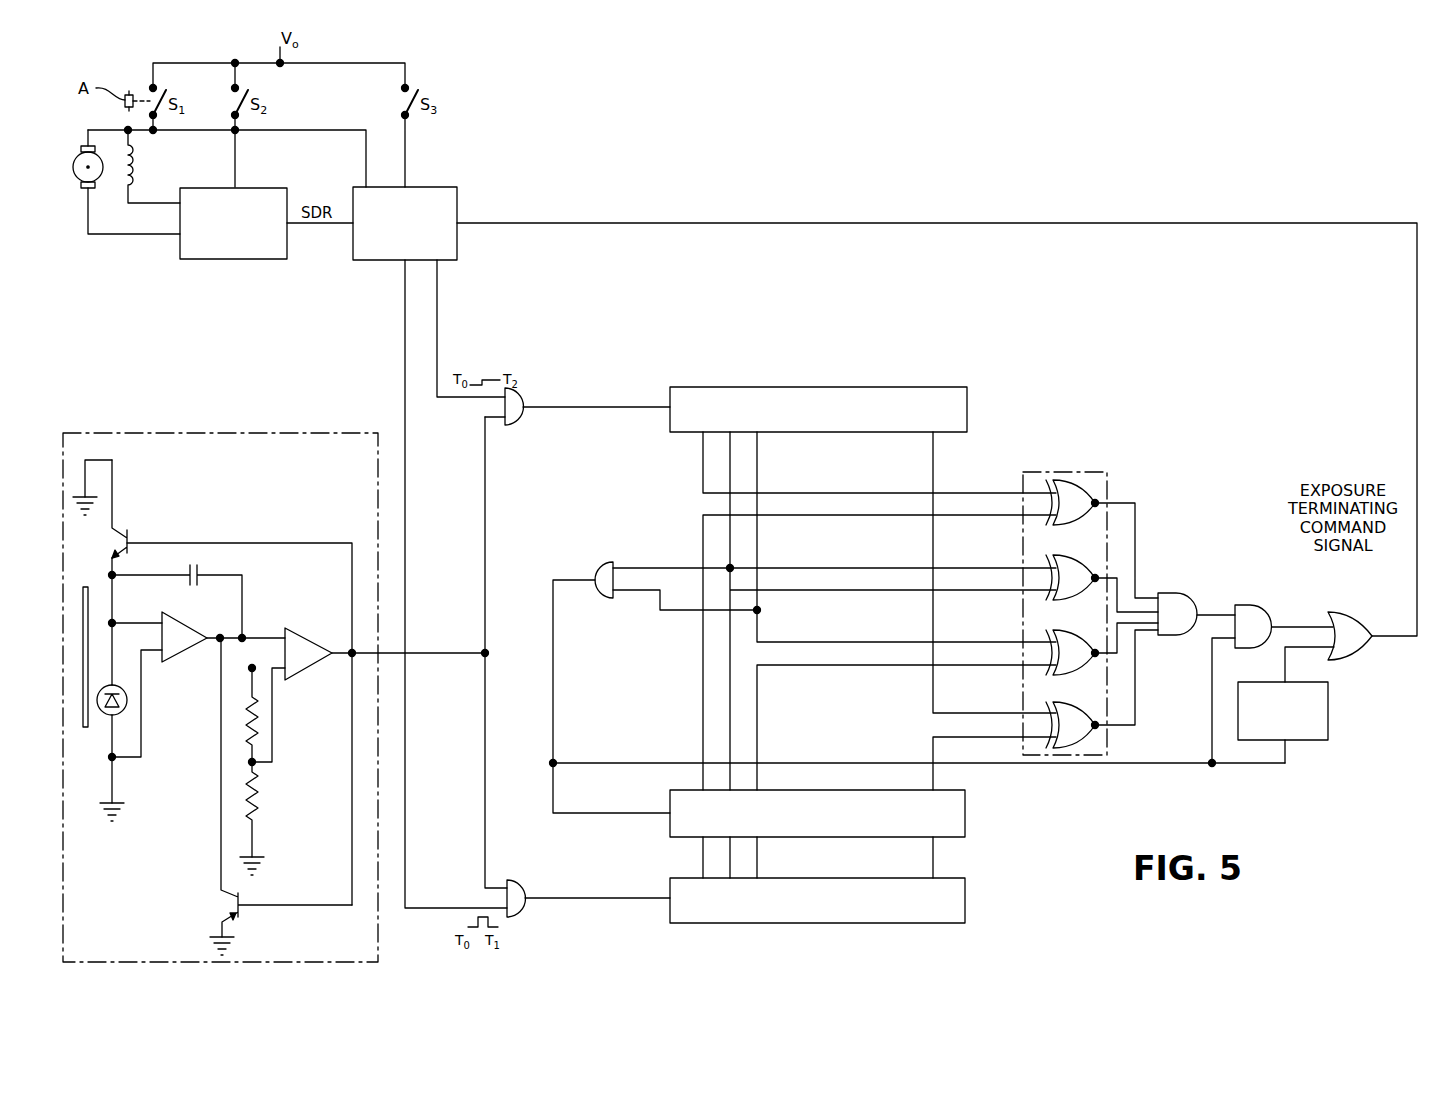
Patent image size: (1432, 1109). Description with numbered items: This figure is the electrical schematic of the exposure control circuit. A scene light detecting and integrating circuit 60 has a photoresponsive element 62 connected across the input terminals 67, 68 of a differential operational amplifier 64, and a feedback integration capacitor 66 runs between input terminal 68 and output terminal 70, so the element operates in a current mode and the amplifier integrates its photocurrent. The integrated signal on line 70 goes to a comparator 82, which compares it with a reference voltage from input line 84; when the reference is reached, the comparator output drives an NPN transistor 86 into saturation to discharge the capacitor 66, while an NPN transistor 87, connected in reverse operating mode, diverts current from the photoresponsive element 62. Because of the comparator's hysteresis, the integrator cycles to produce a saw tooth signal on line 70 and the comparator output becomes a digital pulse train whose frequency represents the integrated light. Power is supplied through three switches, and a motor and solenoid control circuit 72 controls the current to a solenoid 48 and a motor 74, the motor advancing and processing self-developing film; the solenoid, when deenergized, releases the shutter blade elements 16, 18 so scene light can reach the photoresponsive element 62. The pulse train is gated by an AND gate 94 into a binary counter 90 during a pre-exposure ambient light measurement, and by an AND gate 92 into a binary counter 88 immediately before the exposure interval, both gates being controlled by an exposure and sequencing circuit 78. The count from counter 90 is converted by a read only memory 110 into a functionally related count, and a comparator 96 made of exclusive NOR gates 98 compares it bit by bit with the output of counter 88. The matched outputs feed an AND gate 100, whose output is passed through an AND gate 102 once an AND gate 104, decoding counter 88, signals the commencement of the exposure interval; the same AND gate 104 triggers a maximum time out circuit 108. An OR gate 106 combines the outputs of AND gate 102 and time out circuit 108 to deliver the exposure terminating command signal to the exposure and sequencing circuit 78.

The shutter blade element 16 is at (87, 631).
The shutter blade element 18 is at (84, 588).
The solenoid 48 is at (136, 167).
The scene light detecting and integrating circuit 60 is at (268, 516).
The photoresponsive element 62 is at (105, 715).
The operational amplifier 64 is at (183, 622).
The feedback integration capacitor 66 is at (202, 565).
The input terminal 67 is at (150, 652).
The input terminal 68 is at (133, 623).
The output terminal 70 is at (220, 636).
The motor and solenoid control circuit 72 is at (245, 260).
The motor 74 is at (75, 178).
The exposure and sequencing circuit 78 is at (382, 260).
The comparator 82 is at (306, 667).
The input line 84 is at (273, 704).
The NPN transistor 86 is at (240, 897).
The NPN transistor 87 is at (130, 536).
The binary integration counter 88 is at (832, 387).
The binary integration counter 90 is at (865, 928).
The AND gate 92 is at (523, 393).
The AND gate 94 is at (352, 648).
The comparator 96 is at (1108, 488).
The exclusive NOR gates 98 is at (1078, 482).
The AND gate 100 is at (1182, 593).
The AND gate 102 is at (1253, 605).
The AND gate 104 is at (600, 598).
The OR gate 106 is at (1360, 603).
The maximum time out circuit 108 is at (1328, 703).
The read only memory 110 is at (965, 812).